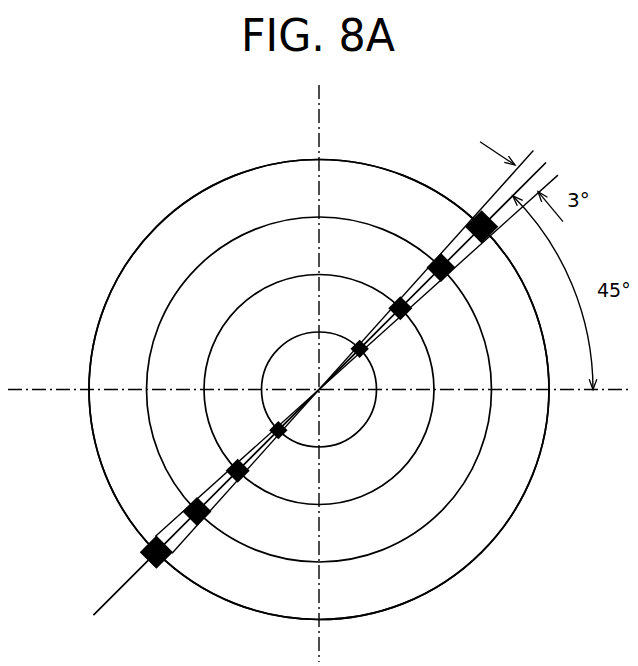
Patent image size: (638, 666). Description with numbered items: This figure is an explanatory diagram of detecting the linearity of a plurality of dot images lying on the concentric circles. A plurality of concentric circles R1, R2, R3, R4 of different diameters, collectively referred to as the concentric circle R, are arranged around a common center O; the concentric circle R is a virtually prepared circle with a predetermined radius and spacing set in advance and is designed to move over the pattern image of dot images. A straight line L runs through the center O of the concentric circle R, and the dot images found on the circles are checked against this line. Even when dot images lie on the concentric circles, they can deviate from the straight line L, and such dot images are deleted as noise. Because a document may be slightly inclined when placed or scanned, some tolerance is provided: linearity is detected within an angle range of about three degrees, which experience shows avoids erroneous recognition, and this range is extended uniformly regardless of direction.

The center of the concentric circle O is at (320, 373).
The concentric circle R1 is at (375, 413).
The concentric circle R2 is at (418, 452).
The concentric circle R3 is at (465, 485).
The concentric circle R4 is at (508, 522).
The concentric circle R is at (405, 602).
The straight line L is at (319, 394).